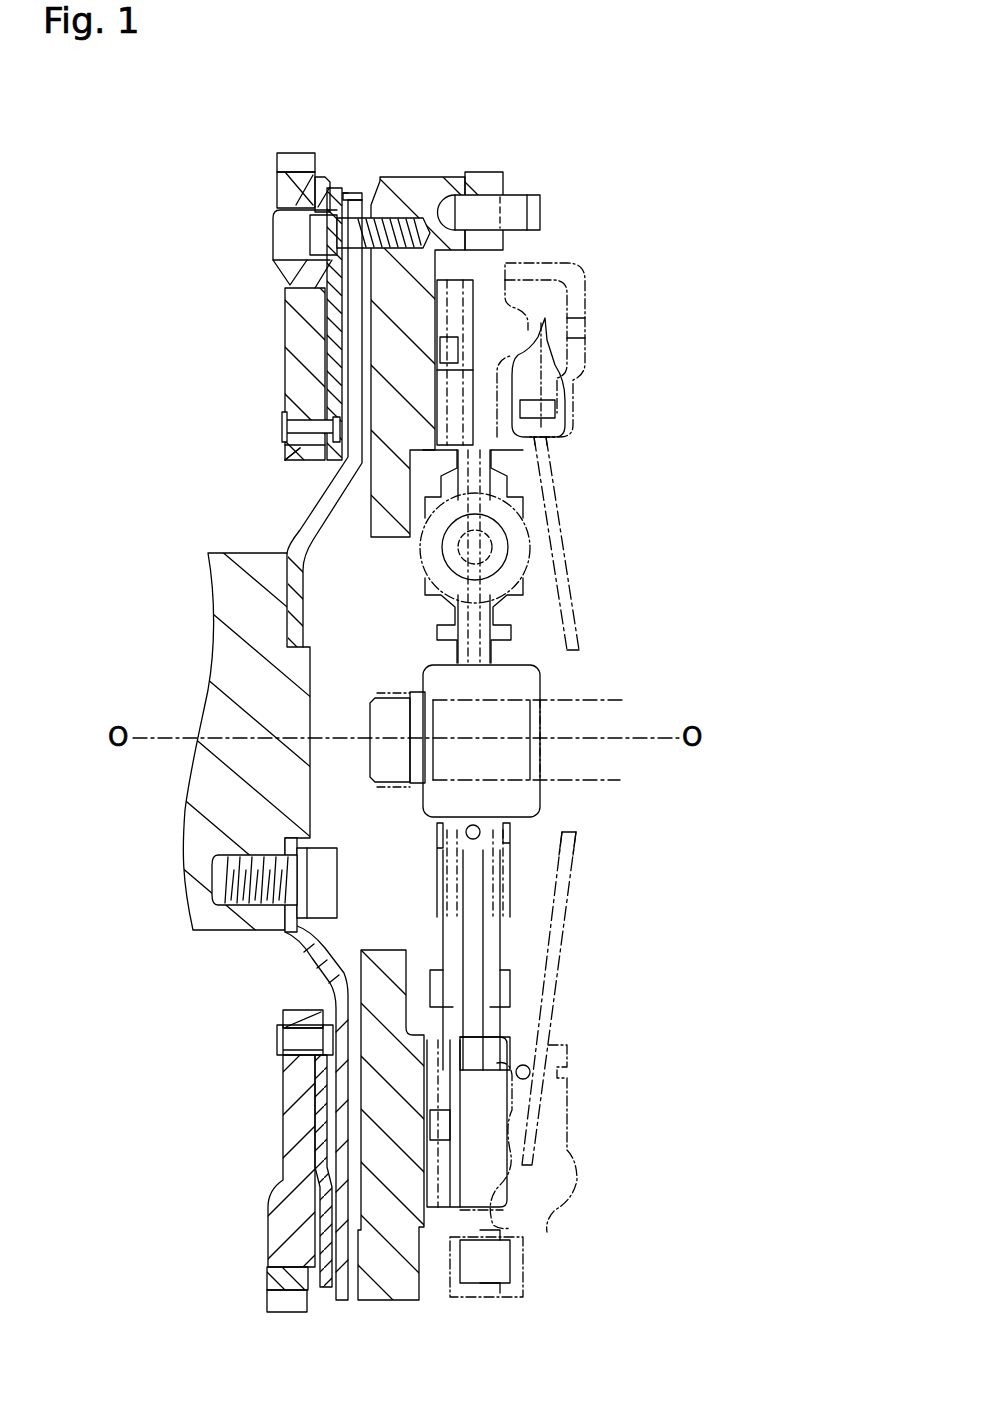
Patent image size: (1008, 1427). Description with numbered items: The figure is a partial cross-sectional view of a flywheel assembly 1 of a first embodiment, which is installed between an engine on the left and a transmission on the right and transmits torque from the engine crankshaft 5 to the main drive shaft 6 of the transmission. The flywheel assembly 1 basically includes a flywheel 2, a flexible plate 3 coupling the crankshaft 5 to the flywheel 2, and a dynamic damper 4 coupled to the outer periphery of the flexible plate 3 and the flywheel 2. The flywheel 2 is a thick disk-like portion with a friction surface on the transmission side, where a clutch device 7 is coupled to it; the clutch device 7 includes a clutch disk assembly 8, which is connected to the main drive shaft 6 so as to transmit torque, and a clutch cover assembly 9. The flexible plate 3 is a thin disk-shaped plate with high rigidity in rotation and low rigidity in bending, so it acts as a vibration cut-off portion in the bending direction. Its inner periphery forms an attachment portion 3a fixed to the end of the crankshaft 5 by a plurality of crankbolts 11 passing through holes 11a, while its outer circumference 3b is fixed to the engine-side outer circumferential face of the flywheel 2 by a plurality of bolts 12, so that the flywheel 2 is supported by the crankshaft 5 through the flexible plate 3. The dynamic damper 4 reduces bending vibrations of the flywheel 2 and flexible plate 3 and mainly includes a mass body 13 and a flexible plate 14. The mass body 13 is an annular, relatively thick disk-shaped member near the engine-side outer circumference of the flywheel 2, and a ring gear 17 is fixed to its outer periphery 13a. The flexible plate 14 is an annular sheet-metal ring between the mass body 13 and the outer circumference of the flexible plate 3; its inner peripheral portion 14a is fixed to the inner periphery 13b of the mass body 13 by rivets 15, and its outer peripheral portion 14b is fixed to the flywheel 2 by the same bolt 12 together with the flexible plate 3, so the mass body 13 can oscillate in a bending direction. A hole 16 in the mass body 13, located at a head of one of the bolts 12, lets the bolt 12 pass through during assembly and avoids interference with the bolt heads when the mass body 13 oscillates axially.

The flywheel assembly 1 is at (380, 163).
The flywheel 2 is at (400, 297).
The flexible plate 3 is at (350, 468).
The attachment portion 3a is at (283, 925).
The outer circumference of the flexible plate 3b is at (358, 193).
The dynamic damper 4 is at (250, 277).
The crankshaft 5 is at (233, 655).
The main drive shaft 6 is at (600, 697).
The clutch device 7 is at (600, 343).
The clutch disk assembly 8 is at (533, 533).
The clutch cover assembly 9 is at (580, 382).
The crankbolt 11 is at (323, 888).
The hole 11a is at (338, 873).
The bolt 12 is at (437, 178).
The mass body 13 is at (303, 317).
The outer periphery of the mass body 13a is at (330, 173).
The inner periphery of the mass body 13b is at (347, 472).
The flexible plate 14 is at (327, 373).
The inner peripheral portion 14a is at (293, 455).
The outer peripheral portion 14b is at (345, 193).
The rivet 15 is at (293, 430).
The hole 16 is at (292, 213).
The ring gear 17 is at (287, 187).